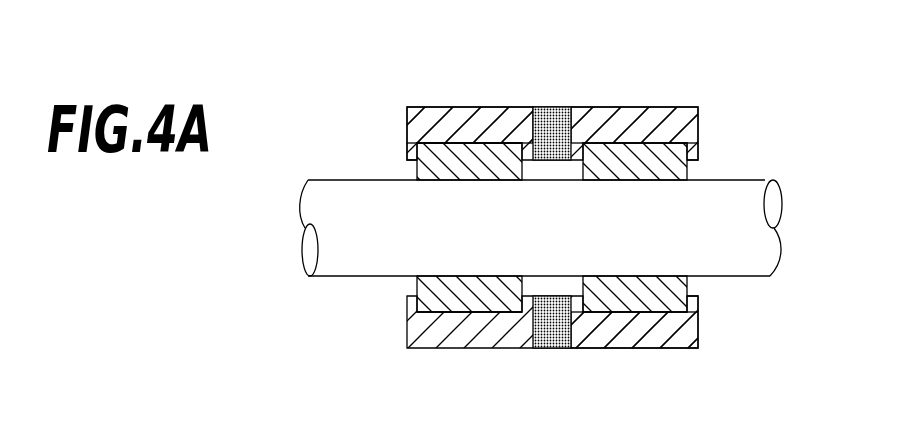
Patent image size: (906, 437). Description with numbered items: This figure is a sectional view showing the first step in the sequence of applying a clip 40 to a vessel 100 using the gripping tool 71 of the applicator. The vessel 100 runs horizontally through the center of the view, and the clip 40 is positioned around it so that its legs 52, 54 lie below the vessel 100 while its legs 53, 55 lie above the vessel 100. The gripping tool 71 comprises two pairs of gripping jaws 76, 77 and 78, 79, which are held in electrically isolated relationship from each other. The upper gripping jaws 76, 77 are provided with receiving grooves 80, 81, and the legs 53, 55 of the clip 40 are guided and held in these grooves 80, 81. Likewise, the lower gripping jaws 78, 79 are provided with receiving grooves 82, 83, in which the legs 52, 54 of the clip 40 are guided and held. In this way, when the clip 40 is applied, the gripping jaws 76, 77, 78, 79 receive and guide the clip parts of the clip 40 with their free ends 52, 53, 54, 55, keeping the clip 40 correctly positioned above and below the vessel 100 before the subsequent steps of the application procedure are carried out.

The clip 40 is at (422, 136).
The leg 52 is at (678, 288).
The leg 53 is at (680, 165).
The leg 54 is at (428, 285).
The leg 55 is at (440, 172).
The gripping tool 71 is at (687, 72).
The gripping jaw 76 is at (642, 125).
The gripping jaw 77 is at (500, 123).
The gripping jaw 78 is at (640, 333).
The gripping jaw 79 is at (487, 333).
The receiving groove 80 is at (690, 132).
The receiving groove 81 is at (480, 148).
The receiving groove 82 is at (690, 327).
The receiving groove 83 is at (485, 310).
The vessel 100 is at (566, 242).